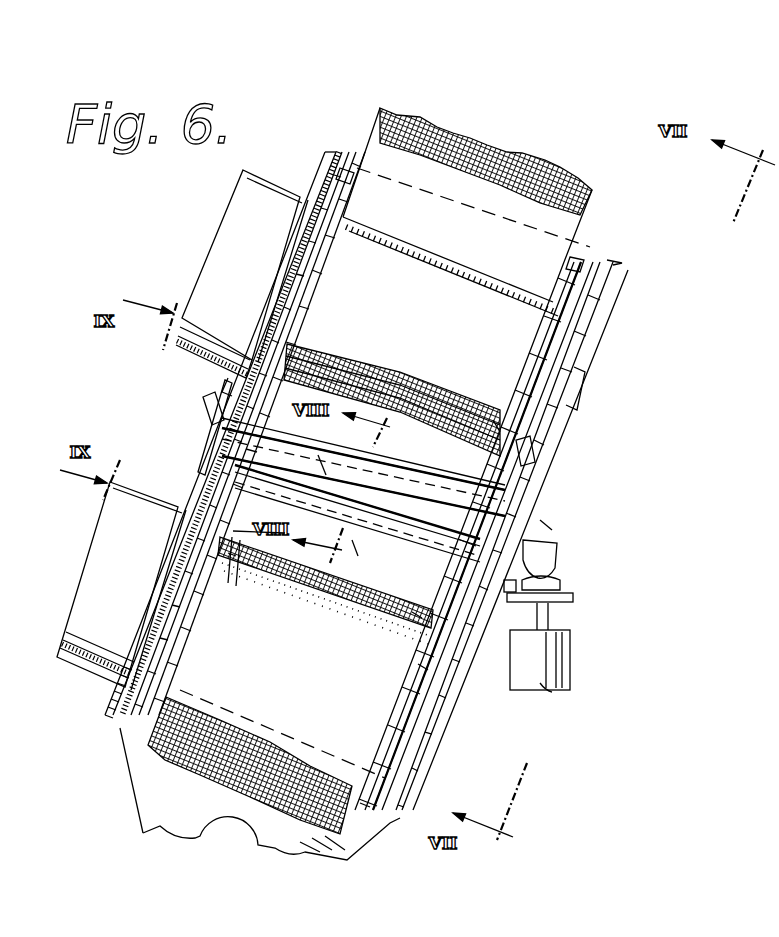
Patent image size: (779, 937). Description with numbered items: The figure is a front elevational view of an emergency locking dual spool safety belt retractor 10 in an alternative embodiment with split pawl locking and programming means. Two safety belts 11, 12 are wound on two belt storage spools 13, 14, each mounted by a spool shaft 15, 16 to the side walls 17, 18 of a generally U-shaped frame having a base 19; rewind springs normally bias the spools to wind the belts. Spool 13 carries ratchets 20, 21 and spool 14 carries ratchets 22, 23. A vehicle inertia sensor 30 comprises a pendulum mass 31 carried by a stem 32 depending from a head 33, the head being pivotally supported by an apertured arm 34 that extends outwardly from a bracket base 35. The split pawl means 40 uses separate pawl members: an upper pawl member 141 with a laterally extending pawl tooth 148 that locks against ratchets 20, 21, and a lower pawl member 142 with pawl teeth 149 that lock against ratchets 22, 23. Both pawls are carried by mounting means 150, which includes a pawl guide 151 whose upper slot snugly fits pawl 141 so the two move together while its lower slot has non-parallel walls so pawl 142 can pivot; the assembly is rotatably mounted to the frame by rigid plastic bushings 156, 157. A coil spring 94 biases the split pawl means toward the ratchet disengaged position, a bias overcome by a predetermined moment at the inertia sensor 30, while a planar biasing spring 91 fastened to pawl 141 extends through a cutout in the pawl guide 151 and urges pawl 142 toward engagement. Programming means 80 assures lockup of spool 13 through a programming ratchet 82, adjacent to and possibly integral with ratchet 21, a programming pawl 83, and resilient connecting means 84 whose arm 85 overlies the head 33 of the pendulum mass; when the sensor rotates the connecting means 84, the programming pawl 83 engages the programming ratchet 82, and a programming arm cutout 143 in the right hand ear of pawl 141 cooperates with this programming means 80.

The emergency locking dual spool safety belt retractor 10 is at (126, 290).
The safety belt 11 is at (503, 175).
The safety belt 12 is at (240, 790).
The belt storage spool 13 is at (600, 295).
The belt storage spool 14 is at (412, 741).
The spool shaft 15 is at (300, 290).
The spool shaft 16 is at (175, 605).
The side wall 17 is at (332, 170).
The side wall 18 is at (620, 275).
The base 19 is at (155, 782).
The ratchet 20 is at (345, 178).
The ratchet 21 is at (575, 262).
The ratchet 22 is at (157, 678).
The ratchet 23 is at (385, 775).
The vehicle inertia sensor 30 is at (580, 660).
The pendulum mass 31 is at (552, 692).
The stem 32 is at (550, 620).
The head 33 is at (560, 580).
The apertured arm 34 is at (572, 598).
The bracket base 35 is at (512, 592).
The split pawl means 40 is at (190, 457).
The programming means 80 is at (589, 611).
The programming ratchet 82 is at (572, 330).
The programming pawl 83 is at (497, 425).
The resilient connecting means 84 is at (545, 525).
The arm 85 is at (580, 555).
The planar biasing spring 91 is at (368, 552).
The coil spring 94 is at (222, 388).
The upper pawl member 141 is at (447, 492).
The lower pawl member 142 is at (378, 585).
The programming arm cutout 143 is at (520, 492).
The pawl tooth 148 is at (397, 460).
The pawl teeth 149 is at (232, 557).
The mounting means 150 is at (190, 412).
The pawl guide 151 is at (323, 478).
The bushing 156 is at (178, 510).
The bushing 157 is at (422, 668).